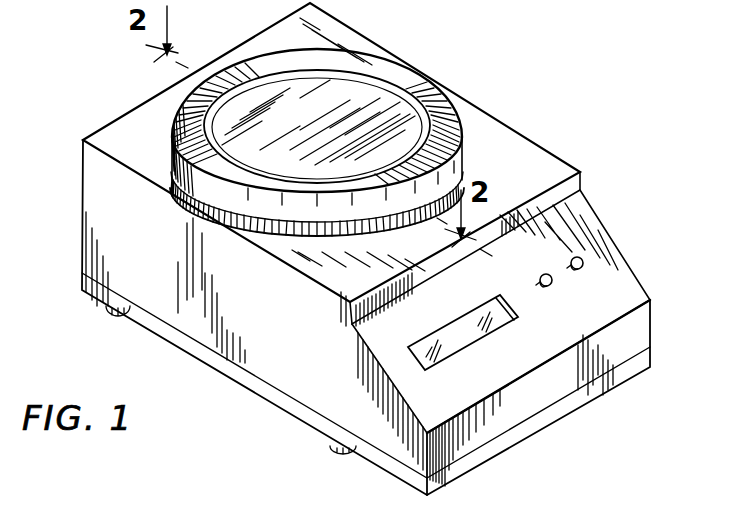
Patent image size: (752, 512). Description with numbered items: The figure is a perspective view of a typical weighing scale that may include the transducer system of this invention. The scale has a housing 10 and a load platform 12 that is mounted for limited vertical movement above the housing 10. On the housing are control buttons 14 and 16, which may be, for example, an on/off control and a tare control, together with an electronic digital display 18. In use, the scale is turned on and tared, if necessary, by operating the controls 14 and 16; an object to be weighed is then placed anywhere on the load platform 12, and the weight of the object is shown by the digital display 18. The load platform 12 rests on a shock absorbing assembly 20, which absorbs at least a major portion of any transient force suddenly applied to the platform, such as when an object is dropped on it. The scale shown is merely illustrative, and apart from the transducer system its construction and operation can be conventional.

The housing 10 is at (90, 224).
The load platform 12 is at (240, 72).
The control button 14 is at (577, 271).
The control button 16 is at (545, 288).
The electronic digital display 18 is at (460, 346).
The shock absorbing assembly 20 is at (382, 233).